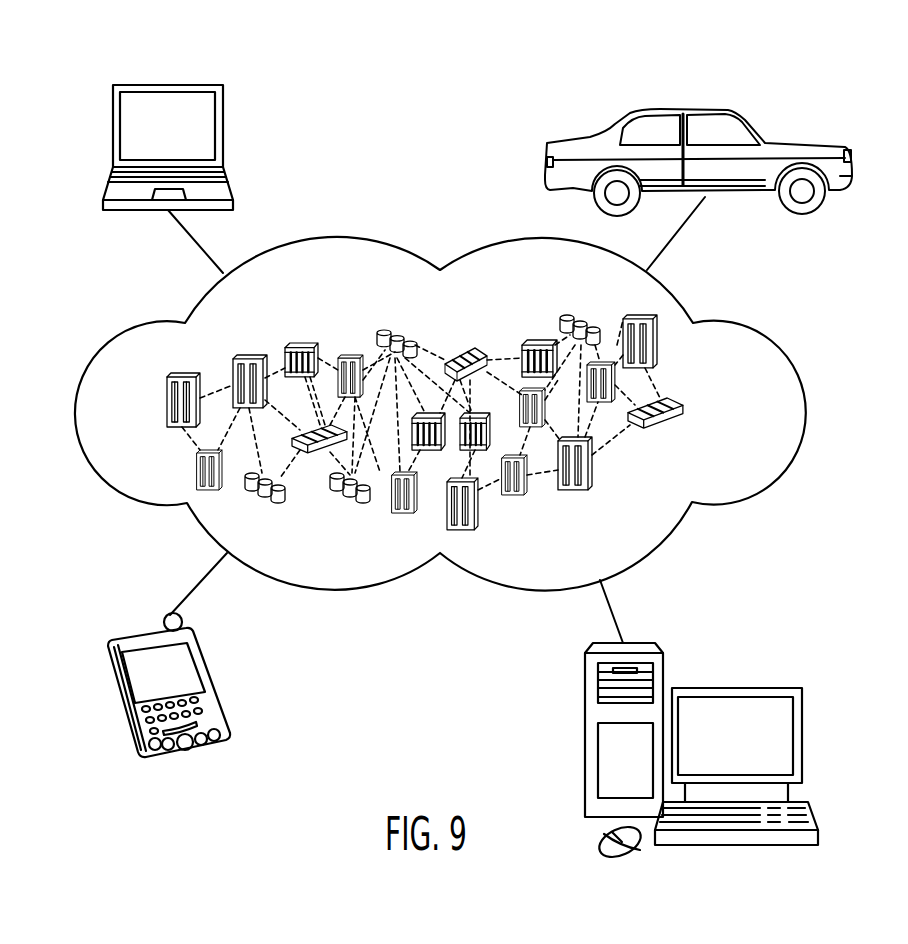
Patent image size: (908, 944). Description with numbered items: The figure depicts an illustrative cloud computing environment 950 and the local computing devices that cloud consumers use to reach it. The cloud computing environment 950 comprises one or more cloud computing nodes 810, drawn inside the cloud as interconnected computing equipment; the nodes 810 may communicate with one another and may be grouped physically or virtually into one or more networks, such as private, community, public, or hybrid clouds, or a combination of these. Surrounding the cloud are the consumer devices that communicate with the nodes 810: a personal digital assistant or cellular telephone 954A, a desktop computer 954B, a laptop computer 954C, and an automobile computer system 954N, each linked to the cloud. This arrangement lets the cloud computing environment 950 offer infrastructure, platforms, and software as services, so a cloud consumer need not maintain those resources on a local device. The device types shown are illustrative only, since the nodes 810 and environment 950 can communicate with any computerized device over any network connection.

The cloud computing environment 950 is at (748, 327).
The cloud computing node 810 is at (688, 413).
The personal digital assistant (PDA) or cellular telephone 954A is at (150, 630).
The desktop computer 954B is at (735, 688).
The laptop computer 954C is at (168, 82).
The automobile computer system 954N is at (675, 110).